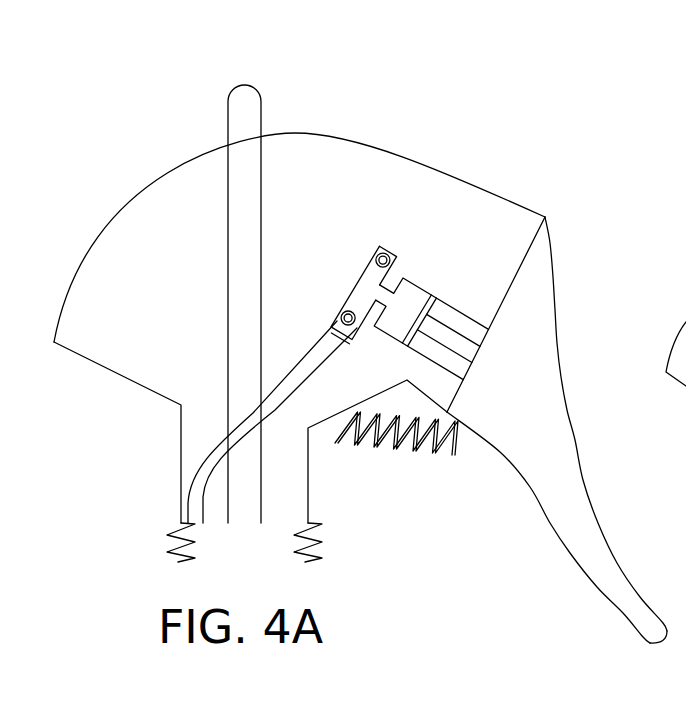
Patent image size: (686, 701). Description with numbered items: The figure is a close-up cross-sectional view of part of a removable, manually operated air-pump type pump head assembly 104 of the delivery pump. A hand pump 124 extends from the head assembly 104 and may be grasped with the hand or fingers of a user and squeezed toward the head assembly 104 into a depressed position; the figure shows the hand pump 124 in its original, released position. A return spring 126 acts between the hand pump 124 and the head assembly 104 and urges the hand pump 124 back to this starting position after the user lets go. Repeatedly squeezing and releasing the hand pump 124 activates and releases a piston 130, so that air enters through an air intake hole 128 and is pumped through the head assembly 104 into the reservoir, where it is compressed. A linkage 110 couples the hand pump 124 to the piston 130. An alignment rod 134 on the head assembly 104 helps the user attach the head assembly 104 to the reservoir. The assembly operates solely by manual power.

The pump head assembly 104 is at (135, 434).
The trigger lever and supply tube 110 is at (342, 303).
The hand pump 124 is at (578, 486).
The return spring 126 is at (402, 458).
The air intake hole 128 is at (384, 260).
The piston 130 is at (413, 297).
The alignment rod 134 is at (245, 155).